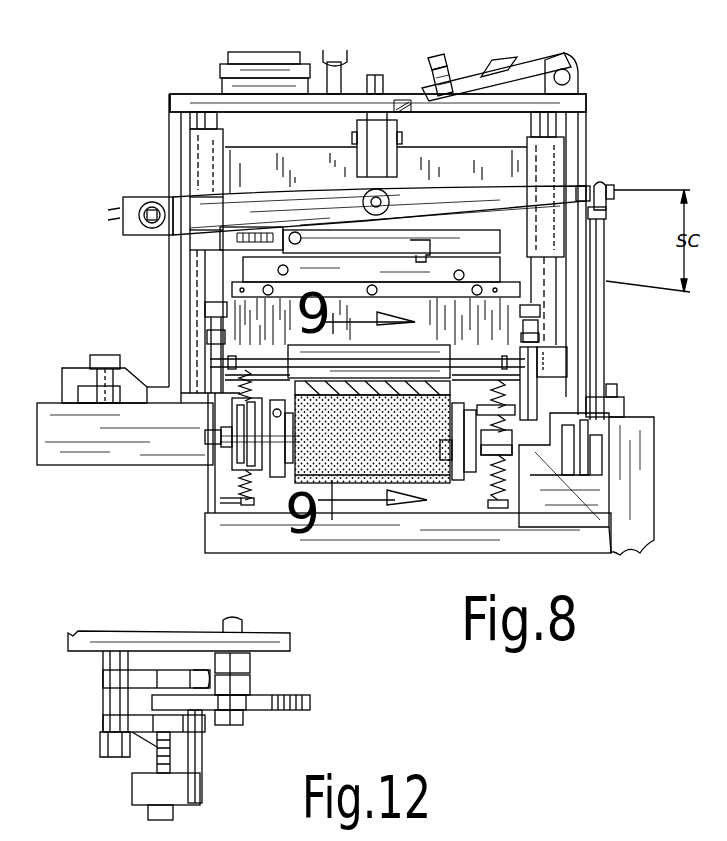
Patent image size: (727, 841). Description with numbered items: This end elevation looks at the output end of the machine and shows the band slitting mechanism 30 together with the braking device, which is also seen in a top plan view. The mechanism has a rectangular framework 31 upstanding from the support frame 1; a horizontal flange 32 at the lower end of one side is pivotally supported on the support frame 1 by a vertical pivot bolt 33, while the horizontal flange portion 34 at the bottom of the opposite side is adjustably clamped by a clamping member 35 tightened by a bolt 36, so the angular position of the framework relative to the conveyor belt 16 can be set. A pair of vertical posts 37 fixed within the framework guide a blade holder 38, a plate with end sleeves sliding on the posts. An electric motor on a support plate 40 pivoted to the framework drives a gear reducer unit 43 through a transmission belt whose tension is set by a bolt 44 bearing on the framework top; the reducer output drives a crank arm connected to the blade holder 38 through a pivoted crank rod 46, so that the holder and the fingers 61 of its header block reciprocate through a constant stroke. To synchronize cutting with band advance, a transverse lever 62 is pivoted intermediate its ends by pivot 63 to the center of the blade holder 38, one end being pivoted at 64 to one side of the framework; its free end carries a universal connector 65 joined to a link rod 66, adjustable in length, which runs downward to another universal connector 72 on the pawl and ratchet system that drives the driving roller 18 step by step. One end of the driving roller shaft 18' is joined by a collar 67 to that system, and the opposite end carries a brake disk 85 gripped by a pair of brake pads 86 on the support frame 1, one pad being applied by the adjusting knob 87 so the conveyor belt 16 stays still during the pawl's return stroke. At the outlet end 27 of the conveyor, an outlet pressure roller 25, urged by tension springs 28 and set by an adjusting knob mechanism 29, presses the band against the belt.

In FIG. 8, the band slitting mechanism 30 is at (172, 84).
In FIG. 8, the rectangular framework 31 is at (175, 143).
In FIG. 8, the vertical posts 37 is at (200, 290).
In FIG. 8, the transverse lever 62 is at (207, 207).
In FIG. 8, the pivot 64 is at (150, 228).
In FIG. 8, the pivot 63 is at (380, 197).
In FIG. 8, the gear reducer unit 43 is at (248, 52).
In FIG. 8, the pivoted crank rod 46 is at (365, 75).
In FIG. 8, the bolt 44 is at (445, 55).
In FIG. 8, the support plate 40 is at (488, 62).
In FIG. 8, the blade holder 38 is at (580, 150).
In FIG. 8, the universal connector 65 is at (604, 184).
In FIG. 8, the link rod 66 is at (606, 262).
In FIG. 8, the fingers 61 is at (190, 330).
In FIG. 8, the adjusting knob mechanism 29 is at (205, 308).
In FIG. 8, the bolt 36 is at (92, 360).
In FIG. 8, the clamping member 35 is at (68, 385).
In FIG. 8, the horizontal flange portion 34 is at (142, 396).
In FIG. 8, the outlet pressure roller 25 is at (228, 415).
In FIG. 8, the brake disk 85 is at (235, 485).
In FIG. 12, the brake disk 85 is at (312, 700).
In FIG. 8, the tension springs 28 is at (256, 478).
In FIG. 8, the driving roller 18 is at (295, 490).
In FIG. 8, the driving roller shaft 18' is at (449, 479).
In FIG. 12, the driving roller shaft 18' is at (256, 660).
In FIG. 8, the conveyor belt 16 is at (366, 498).
In FIG. 8, the outlet end 27 is at (350, 486).
In FIG. 8, the collar 67 is at (500, 495).
In FIG. 8, the vertical pivot bolt 33 is at (612, 384).
In FIG. 8, the horizontal flange 32 is at (627, 405).
In FIG. 8, the universal connector 72 is at (660, 440).
In FIG. 12, the support frame 1 is at (92, 632).
In FIG. 12, the brake pads 86 is at (198, 678).
In FIG. 12, the adjusting knob 87 is at (143, 790).